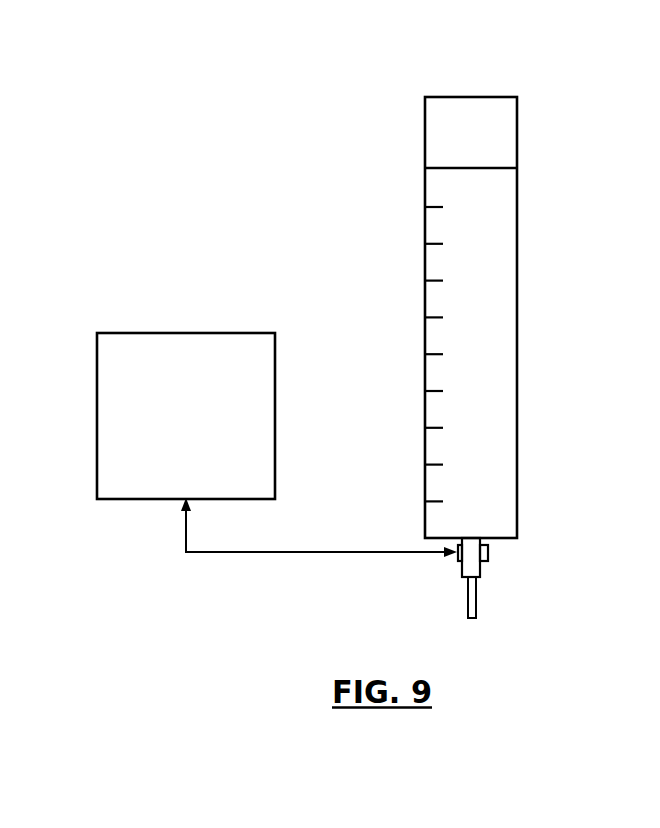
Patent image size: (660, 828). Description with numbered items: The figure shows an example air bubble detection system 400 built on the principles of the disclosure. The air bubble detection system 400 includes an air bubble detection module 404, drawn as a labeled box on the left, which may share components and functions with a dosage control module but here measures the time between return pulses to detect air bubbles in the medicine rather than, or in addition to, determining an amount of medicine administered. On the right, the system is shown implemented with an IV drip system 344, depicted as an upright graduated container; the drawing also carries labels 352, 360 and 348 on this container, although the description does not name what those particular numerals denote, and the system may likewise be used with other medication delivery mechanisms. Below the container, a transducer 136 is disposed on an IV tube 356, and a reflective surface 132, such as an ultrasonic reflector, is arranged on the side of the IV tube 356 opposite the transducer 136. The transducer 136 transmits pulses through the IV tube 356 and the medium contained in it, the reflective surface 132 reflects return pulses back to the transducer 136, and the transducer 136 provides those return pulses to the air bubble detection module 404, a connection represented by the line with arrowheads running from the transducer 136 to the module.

The air bubble detection system 400 is at (205, 143).
The IV drip system 344 is at (584, 108).
The syringe barrel 352 is at (517, 318).
The fluid level 360 is at (460, 168).
The fluid 348 is at (477, 417).
The reflective surface 132 is at (488, 556).
The transducer 136 is at (455, 560).
The IV tube 356 is at (476, 603).
The air bubble detection module 404 is at (182, 333).